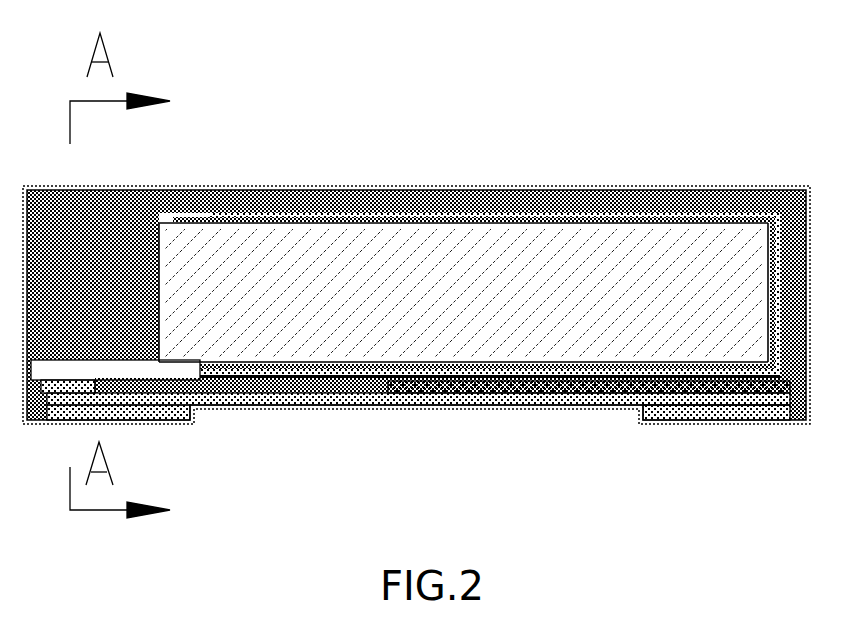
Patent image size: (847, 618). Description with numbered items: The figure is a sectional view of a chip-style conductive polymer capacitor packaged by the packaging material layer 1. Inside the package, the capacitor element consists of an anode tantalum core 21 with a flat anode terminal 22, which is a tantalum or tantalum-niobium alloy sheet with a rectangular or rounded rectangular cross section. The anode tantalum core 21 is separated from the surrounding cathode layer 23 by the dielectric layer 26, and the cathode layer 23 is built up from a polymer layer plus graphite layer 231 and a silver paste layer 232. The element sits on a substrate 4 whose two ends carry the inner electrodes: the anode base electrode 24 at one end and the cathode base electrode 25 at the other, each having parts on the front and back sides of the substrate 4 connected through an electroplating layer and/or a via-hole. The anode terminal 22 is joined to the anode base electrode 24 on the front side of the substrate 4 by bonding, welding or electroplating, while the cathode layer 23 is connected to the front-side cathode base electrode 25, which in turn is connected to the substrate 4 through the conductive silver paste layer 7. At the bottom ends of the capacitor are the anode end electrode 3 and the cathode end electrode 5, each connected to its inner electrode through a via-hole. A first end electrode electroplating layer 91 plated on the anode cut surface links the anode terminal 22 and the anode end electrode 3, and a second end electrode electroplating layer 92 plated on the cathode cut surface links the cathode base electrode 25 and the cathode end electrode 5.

The packaging material layer 1 is at (425, 193).
The anode tantalum core 21 is at (585, 270).
The anode terminal 22 is at (60, 368).
The cathode layer 23 is at (499, 212).
The polymer layer plus graphite layer 231 is at (704, 215).
The silver paste layer 232 is at (190, 218).
The anode base electrode 24 is at (82, 385).
The cathode base electrode 25 is at (570, 387).
The dielectric layer 26 is at (163, 270).
The anode end electrode 3 is at (62, 410).
The substrate 4 is at (332, 397).
The cathode end electrode 5 is at (757, 408).
The conductive silver paste layer 7 is at (453, 378).
The first end electrode electroplating layer 91 is at (156, 418).
The second end electrode electroplating layer 92 is at (687, 417).